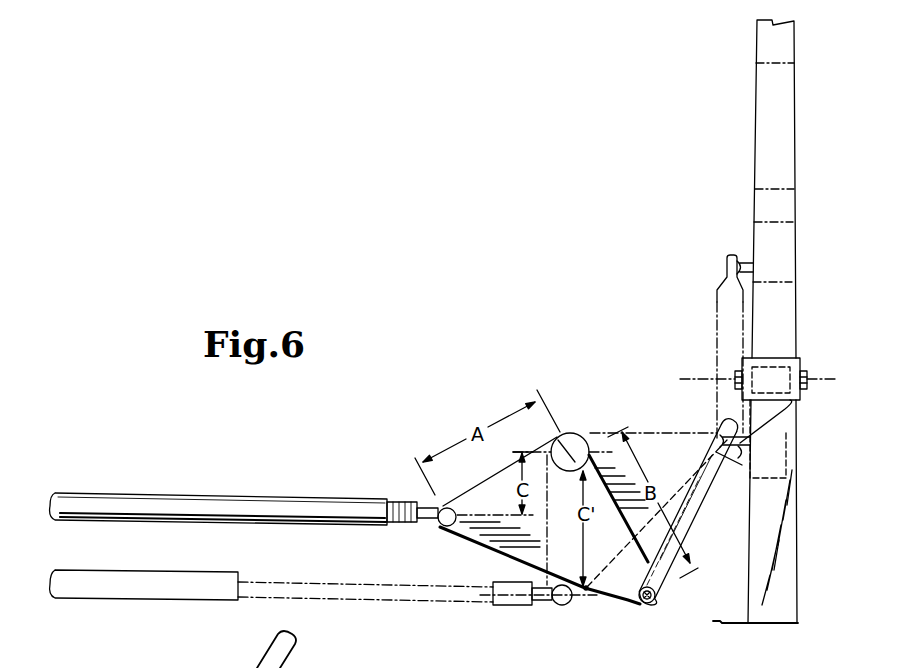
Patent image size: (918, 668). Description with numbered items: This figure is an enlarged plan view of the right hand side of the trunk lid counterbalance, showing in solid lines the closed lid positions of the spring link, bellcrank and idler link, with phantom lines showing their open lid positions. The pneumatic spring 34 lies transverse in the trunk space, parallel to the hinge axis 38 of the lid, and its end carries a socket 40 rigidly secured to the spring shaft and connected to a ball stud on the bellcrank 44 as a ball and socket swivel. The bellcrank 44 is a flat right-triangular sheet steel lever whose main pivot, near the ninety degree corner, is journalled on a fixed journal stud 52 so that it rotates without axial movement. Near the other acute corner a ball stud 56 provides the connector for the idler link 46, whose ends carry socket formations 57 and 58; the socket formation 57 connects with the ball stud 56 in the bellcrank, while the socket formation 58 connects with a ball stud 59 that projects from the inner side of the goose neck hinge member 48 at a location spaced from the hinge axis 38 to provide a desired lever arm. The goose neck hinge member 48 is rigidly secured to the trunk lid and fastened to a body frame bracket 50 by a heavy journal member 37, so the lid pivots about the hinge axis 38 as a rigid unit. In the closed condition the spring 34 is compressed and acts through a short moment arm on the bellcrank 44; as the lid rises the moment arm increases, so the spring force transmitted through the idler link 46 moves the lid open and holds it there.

The pneumatic spring 34 is at (236, 490).
The heavy journal member 37 is at (808, 371).
The hinge axis 38 is at (703, 379).
The socket 40 is at (443, 527).
The bellcrank 44 is at (490, 478).
The idler link 46 is at (689, 530).
The goose neck hinge member 48 is at (757, 207).
The bracket 50 is at (748, 512).
The journal stud 52 is at (575, 445).
The ball stud 56 is at (651, 605).
The socket formation 57 is at (628, 601).
The socket formation 58 is at (715, 440).
The ball stud 59 is at (740, 262).